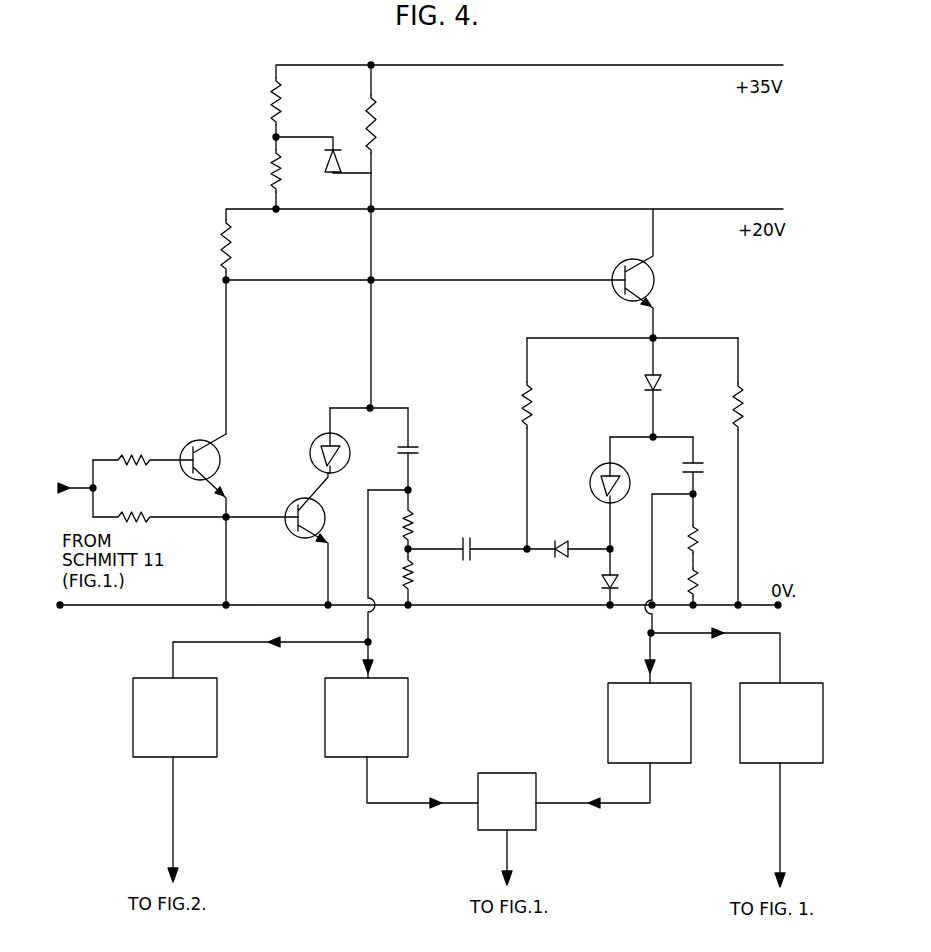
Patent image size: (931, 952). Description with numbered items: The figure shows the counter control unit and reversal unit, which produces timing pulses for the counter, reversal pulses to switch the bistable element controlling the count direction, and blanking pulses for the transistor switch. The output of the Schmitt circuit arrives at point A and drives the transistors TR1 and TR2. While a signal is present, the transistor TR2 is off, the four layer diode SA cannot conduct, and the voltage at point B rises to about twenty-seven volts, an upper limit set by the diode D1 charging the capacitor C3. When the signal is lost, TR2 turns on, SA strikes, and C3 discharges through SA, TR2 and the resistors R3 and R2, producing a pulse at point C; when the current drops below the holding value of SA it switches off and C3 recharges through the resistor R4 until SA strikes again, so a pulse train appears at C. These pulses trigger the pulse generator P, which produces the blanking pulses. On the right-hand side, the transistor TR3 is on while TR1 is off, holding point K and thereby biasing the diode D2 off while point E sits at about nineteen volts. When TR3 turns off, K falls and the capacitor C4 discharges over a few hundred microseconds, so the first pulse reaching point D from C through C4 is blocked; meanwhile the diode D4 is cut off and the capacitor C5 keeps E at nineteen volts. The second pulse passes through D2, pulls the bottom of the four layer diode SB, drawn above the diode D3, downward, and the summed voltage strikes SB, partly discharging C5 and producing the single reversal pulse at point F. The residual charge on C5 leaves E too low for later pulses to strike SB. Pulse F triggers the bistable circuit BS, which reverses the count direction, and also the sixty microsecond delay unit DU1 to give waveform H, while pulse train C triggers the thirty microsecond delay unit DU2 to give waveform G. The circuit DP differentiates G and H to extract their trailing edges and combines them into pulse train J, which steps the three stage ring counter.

The resistor R4 is at (388, 124).
The diode D1 is at (323, 155).
The transistor TR3 is at (617, 273).
The point K is at (632, 327).
The diode D4 is at (669, 387).
The point E is at (651, 450).
The four layer diode SB is at (601, 493).
The diode D3 is at (622, 577).
The capacitor C5 is at (704, 465).
The point F is at (674, 545).
The point D is at (527, 563).
The diode D2 is at (570, 561).
The capacitor C4 is at (467, 560).
The point B is at (369, 397).
The capacitor C3 is at (419, 449).
The point C is at (389, 479).
The resistor R3 is at (395, 523).
The resistor R2 is at (394, 581).
The point A is at (76, 488).
The transistor TR1 is at (192, 511).
The transistor TR2 is at (296, 539).
The four layer diode SA is at (319, 440).
The pulse generator P is at (175, 780).
The 30 microsecond delay unit DU2 is at (408, 725).
The waveform G is at (422, 782).
The differentiating and combining circuit DP is at (536, 818).
The pulse train J is at (514, 857).
The 60 microsecond delay unit DU1 is at (608, 725).
The waveform H is at (604, 785).
The bistable circuit BS is at (781, 785).